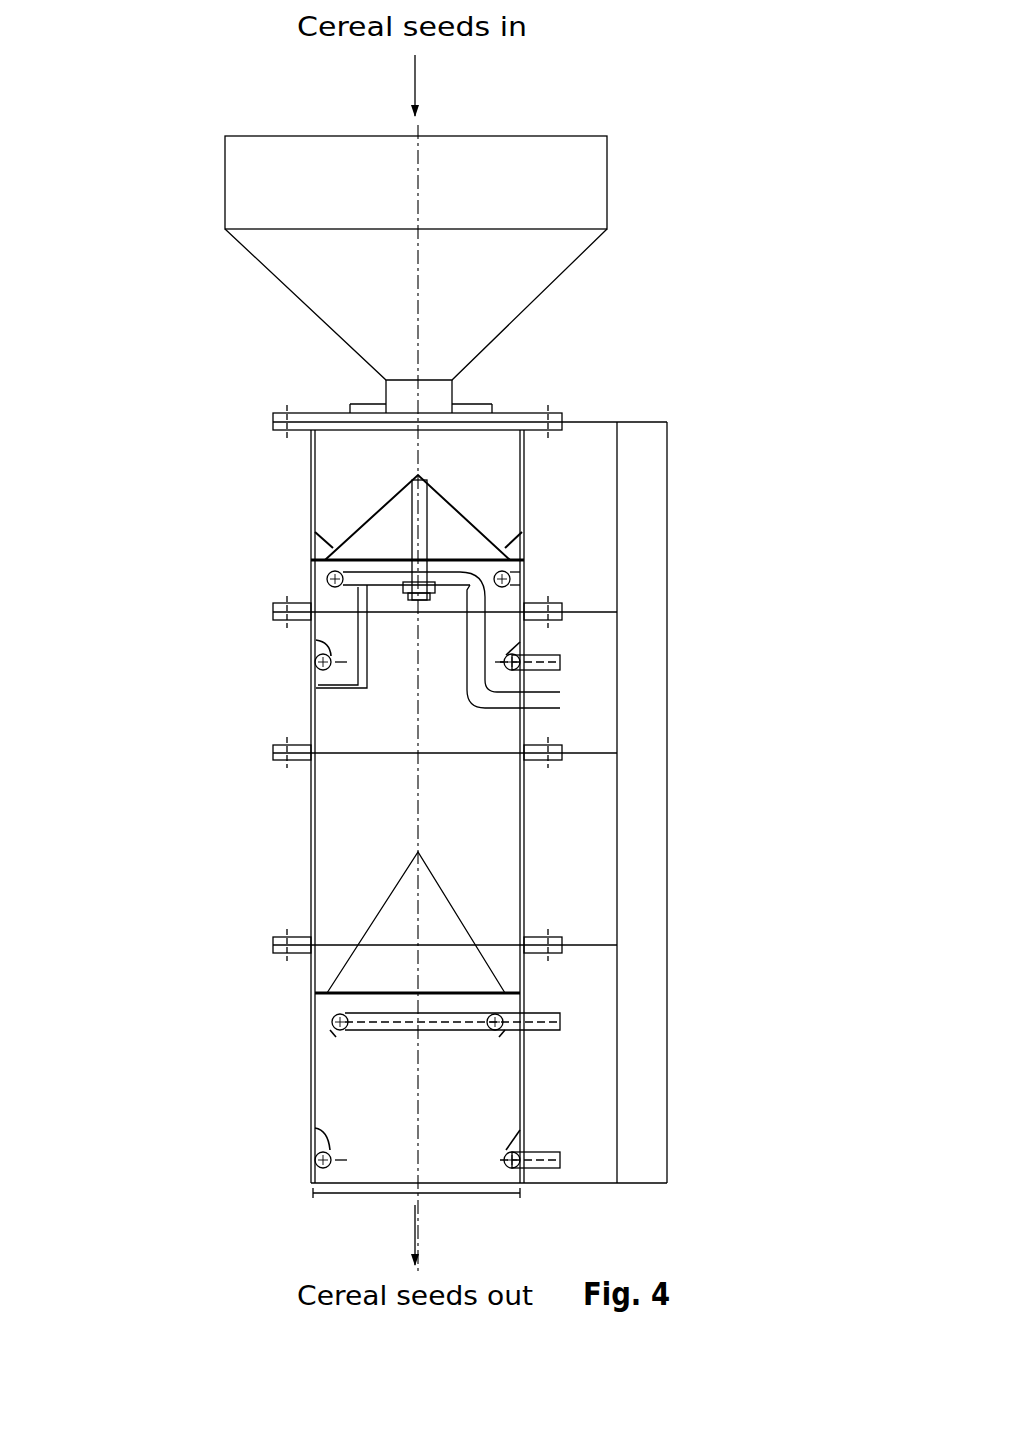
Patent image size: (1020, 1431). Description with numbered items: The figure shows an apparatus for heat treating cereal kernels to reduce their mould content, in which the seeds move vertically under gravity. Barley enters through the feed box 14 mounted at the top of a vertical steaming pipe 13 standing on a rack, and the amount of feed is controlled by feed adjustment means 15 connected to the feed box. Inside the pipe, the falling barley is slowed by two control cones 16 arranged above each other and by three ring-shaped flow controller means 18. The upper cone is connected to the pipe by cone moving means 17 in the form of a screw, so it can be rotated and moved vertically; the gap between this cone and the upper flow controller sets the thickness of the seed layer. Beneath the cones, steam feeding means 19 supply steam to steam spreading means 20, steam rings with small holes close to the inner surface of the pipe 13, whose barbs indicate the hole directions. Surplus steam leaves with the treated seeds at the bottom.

The vertical pipe 13 is at (310, 802).
The feed box 14 is at (218, 186).
The feed adjustment means 15 is at (349, 406).
The control cone 16 is at (370, 511).
The cone moving means 17 is at (429, 575).
The flow controller means 18 is at (315, 535).
The steam feeding means 19 is at (565, 672).
The steam spreading means 20 is at (326, 578).